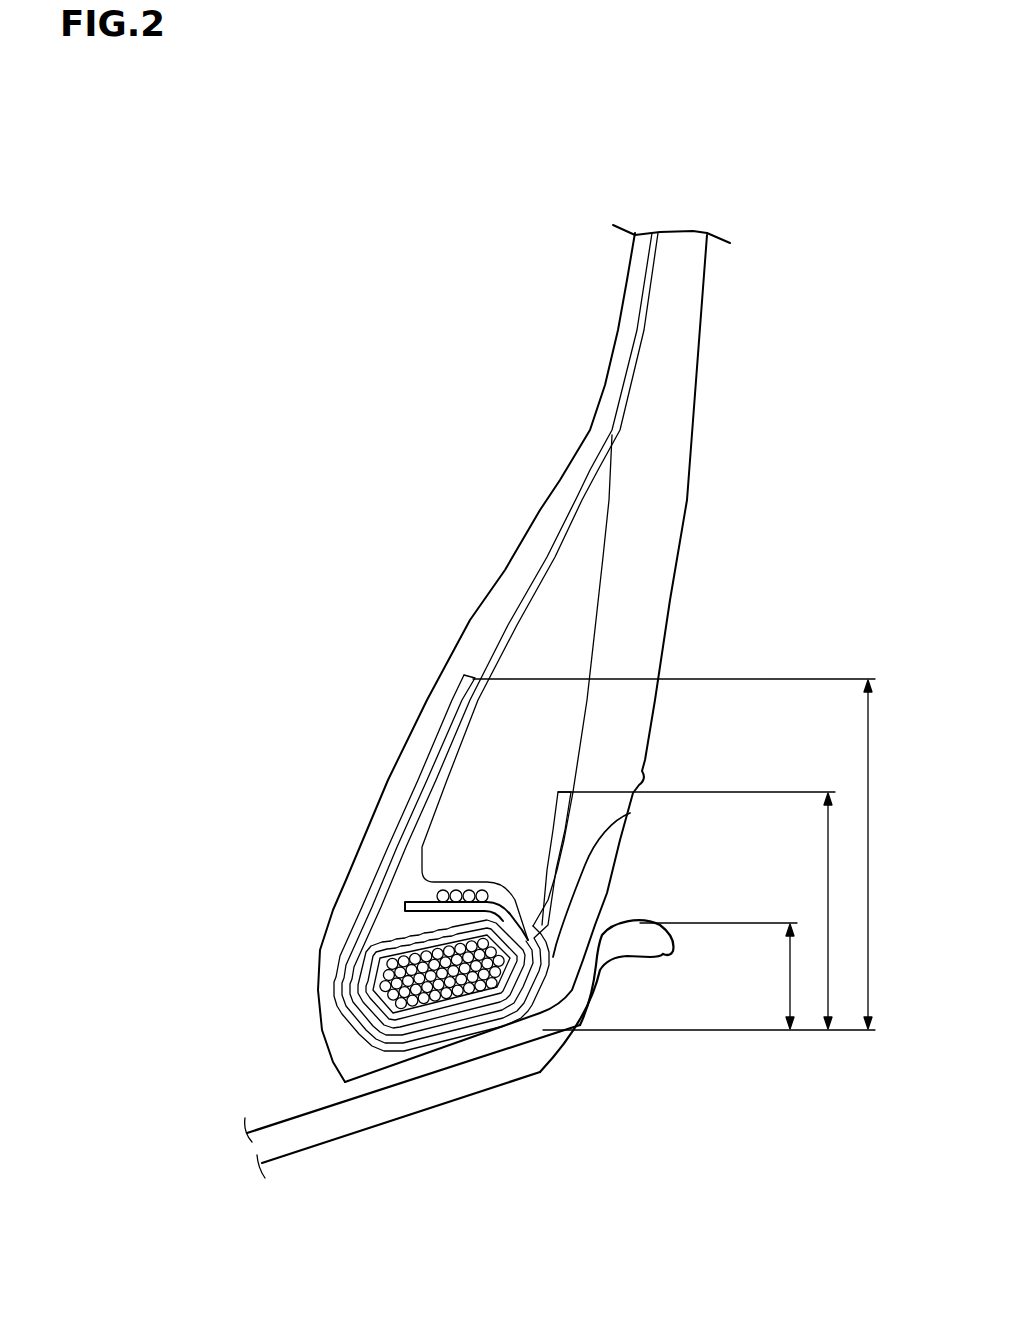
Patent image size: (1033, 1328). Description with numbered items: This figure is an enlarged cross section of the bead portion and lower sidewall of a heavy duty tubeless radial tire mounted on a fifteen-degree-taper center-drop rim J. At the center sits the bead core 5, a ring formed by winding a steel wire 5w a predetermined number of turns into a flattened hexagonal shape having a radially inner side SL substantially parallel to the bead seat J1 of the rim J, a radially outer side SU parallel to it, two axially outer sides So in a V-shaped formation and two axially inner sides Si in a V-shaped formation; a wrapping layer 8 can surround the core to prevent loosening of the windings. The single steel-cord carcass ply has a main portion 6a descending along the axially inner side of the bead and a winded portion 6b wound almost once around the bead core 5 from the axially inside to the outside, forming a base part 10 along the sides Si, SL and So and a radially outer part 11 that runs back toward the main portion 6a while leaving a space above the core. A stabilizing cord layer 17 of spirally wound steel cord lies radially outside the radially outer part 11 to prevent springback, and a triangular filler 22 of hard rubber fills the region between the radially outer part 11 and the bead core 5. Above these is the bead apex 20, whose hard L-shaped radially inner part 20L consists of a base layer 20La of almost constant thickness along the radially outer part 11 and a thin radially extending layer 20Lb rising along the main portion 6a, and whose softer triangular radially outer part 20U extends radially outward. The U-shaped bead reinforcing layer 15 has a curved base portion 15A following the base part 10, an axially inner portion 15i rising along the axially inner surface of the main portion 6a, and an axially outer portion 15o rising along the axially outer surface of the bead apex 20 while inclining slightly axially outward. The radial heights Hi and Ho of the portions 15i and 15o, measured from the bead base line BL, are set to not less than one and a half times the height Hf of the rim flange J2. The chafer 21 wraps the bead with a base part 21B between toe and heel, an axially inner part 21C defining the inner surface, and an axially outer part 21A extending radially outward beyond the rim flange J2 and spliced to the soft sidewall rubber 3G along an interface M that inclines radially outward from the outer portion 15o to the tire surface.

The sidewall rubber 3G is at (670, 417).
The carcass ply main portion 6a is at (567, 523).
The winded portion 6b is at (572, 680).
The base part 10 is at (502, 811).
The bead core 5 is at (380, 1008).
The steel wire 5w is at (390, 1004).
The wrapping layer 8 is at (372, 1003).
The radially outer part 11 is at (405, 900).
The bead reinforcing layer 15 is at (529, 836).
The curved base portion 15A is at (525, 947).
The axially inner portion 15i is at (462, 690).
The axially outer portion 15o is at (568, 815).
The stabilizing cord layer 17 is at (478, 880).
The bead apex 20 is at (380, 630).
The radially outer part 20U is at (550, 625).
The radially inner part 20L is at (346, 860).
The base layer 20La is at (452, 880).
The thin radially extending layer 20Lb is at (418, 893).
The chafer 21 is at (510, 1037).
The axially outer part 21A is at (567, 945).
The base part 21B is at (526, 702).
The axially inner part 21C is at (327, 1060).
The filler 22 is at (392, 920).
The radially outer side SU is at (392, 917).
The axially inner sides Si is at (372, 980).
The axially outer sides So is at (540, 904).
The radially inner side SL is at (470, 1030).
The interface M is at (595, 847).
The bead seat J1 is at (344, 1101).
The rim J is at (292, 1122).
The rim flange J2 is at (664, 955).
The bead base line BL is at (740, 1035).
The radial height of inner portion Hi is at (676, 854).
The radial height of outer portion Ho is at (699, 910).
The height of rim flange Hf is at (722, 976).